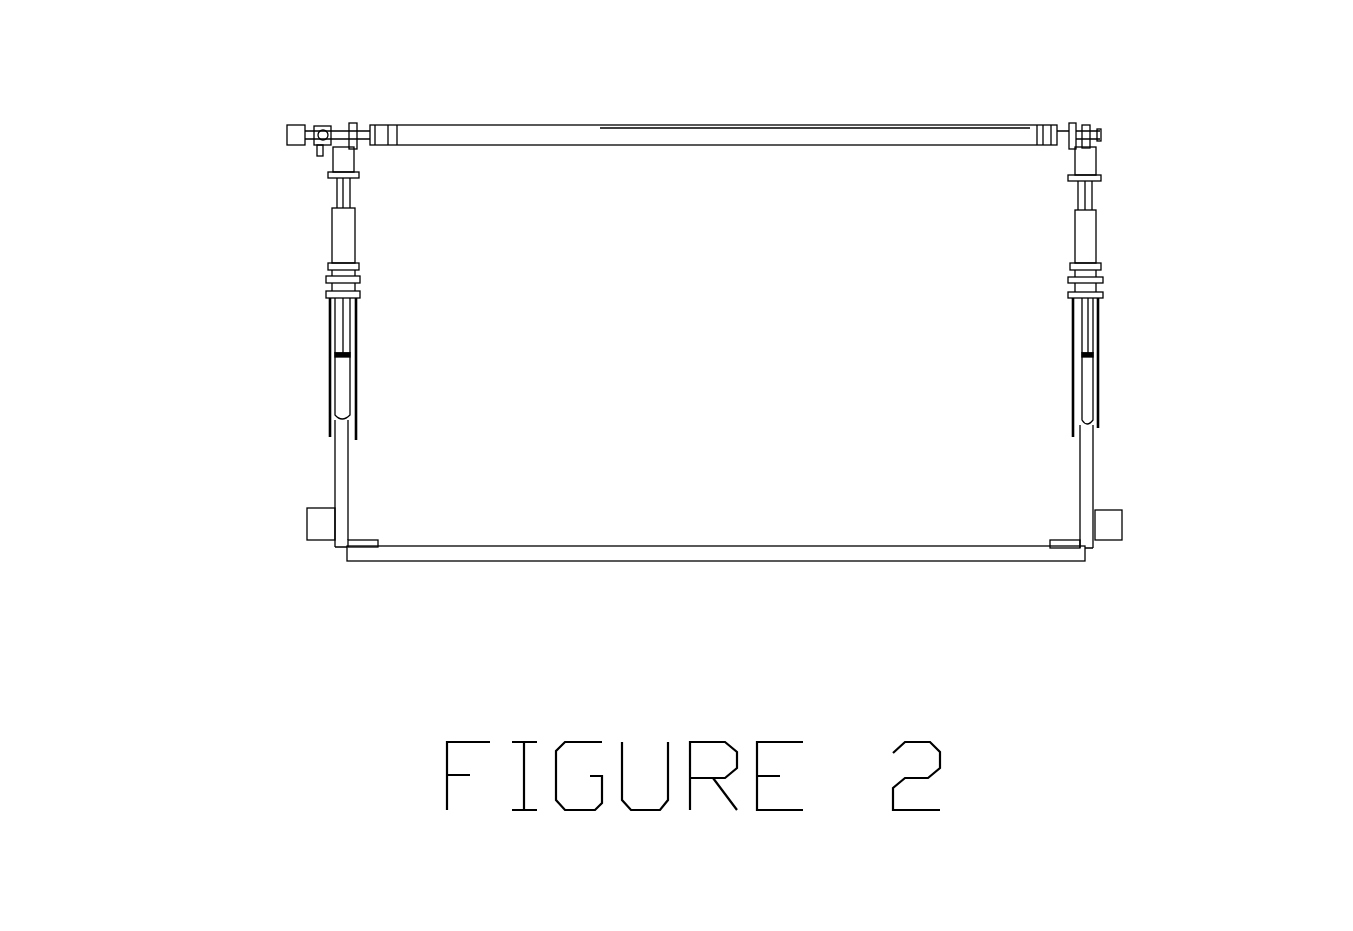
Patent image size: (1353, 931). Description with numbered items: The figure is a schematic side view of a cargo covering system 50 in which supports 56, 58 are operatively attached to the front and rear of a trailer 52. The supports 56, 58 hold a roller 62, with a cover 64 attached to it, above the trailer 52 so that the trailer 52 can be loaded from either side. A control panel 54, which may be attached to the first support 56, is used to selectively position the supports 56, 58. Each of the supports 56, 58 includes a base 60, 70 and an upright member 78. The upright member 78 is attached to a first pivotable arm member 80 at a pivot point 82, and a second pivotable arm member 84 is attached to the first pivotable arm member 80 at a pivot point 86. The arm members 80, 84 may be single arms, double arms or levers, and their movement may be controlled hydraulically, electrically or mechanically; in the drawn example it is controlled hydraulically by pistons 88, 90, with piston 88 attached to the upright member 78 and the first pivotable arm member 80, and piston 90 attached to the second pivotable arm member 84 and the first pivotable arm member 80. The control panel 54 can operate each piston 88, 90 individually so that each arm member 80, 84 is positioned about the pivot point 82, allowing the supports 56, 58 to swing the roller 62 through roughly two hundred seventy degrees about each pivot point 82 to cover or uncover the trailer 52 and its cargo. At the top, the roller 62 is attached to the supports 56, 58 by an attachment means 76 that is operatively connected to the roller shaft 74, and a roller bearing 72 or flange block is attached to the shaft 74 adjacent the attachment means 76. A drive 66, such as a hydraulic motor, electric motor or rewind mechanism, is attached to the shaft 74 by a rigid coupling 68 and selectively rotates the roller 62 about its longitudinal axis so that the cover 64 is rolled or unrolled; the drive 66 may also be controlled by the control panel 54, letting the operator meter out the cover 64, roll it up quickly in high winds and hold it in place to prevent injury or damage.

The cargo covering system 50 is at (1263, 215).
The trailer 52 is at (735, 556).
The control panel 54 is at (308, 510).
The first support 56 is at (290, 318).
The second support 58 is at (1140, 313).
The base 60 is at (372, 542).
The roller 62 is at (596, 126).
The cover 64 is at (754, 126).
The drive 66 is at (294, 124).
The rigid coupling 68 is at (320, 156).
The base 70 is at (1062, 535).
The roller bearing 72 is at (346, 124).
The roller shaft 74 is at (1063, 125).
The attachment means 76 is at (358, 152).
The upright member 78 is at (352, 456).
The first pivotable arm member 80 is at (356, 335).
The pivot point 82 is at (360, 430).
The second pivotable arm member 84 is at (360, 228).
The pivot point 86 is at (360, 264).
The piston 88 is at (341, 370).
The piston 90 is at (330, 228).